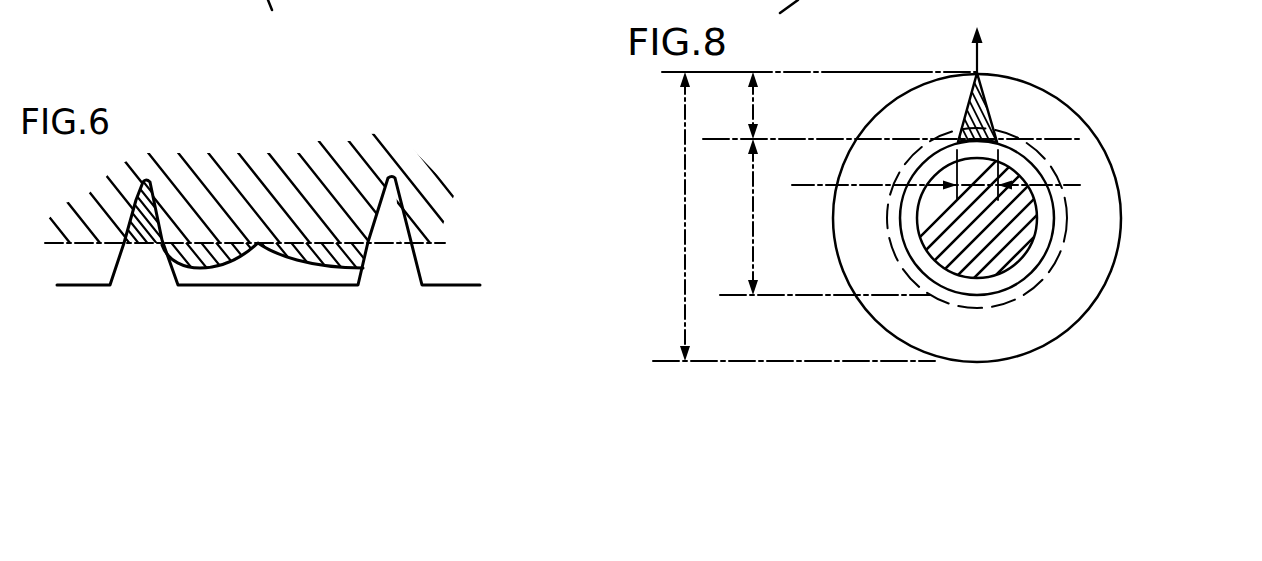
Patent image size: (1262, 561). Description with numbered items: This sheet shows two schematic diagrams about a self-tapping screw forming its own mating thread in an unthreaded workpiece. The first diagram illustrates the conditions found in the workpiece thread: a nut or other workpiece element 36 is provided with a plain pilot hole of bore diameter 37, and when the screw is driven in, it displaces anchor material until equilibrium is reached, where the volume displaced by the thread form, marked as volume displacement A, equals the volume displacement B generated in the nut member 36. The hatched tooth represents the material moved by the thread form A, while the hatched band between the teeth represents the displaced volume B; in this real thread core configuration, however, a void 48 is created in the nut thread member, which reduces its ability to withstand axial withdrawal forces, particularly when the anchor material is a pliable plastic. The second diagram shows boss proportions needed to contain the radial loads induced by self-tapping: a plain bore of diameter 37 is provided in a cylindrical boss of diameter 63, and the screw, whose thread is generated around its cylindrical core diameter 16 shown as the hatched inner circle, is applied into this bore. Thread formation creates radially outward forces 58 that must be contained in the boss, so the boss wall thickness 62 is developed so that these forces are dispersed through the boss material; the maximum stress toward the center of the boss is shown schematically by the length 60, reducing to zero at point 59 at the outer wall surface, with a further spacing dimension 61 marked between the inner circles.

In FIG. 6, the nut or workpiece element 36 is at (75, 188).
In FIG. 8, the nut or workpiece element 36 is at (1068, 108).
In FIG. 6, the plain hole bore diameter 37 is at (75, 250).
In FIG. 8, the plain hole bore diameter 37 is at (753, 210).
In FIG. 6, the void 48 is at (268, 245).
In FIG. 6, the thread form volume displacement A is at (120, 243).
In FIG. 6, the nut member volume displacement B is at (207, 257).
In FIG. 8, the radially outward forces 58 is at (980, 48).
In FIG. 8, the zero stress point 59 is at (980, 73).
In FIG. 8, the maximum force length 60 is at (824, 180).
In FIG. 8, the gap dimension 61 is at (1003, 220).
In FIG. 8, the boss wall thickness 62 is at (753, 85).
In FIG. 8, the cylindrical boss diameter 63 is at (685, 250).
In FIG. 8, the cylindrical core diameter 16 is at (992, 280).